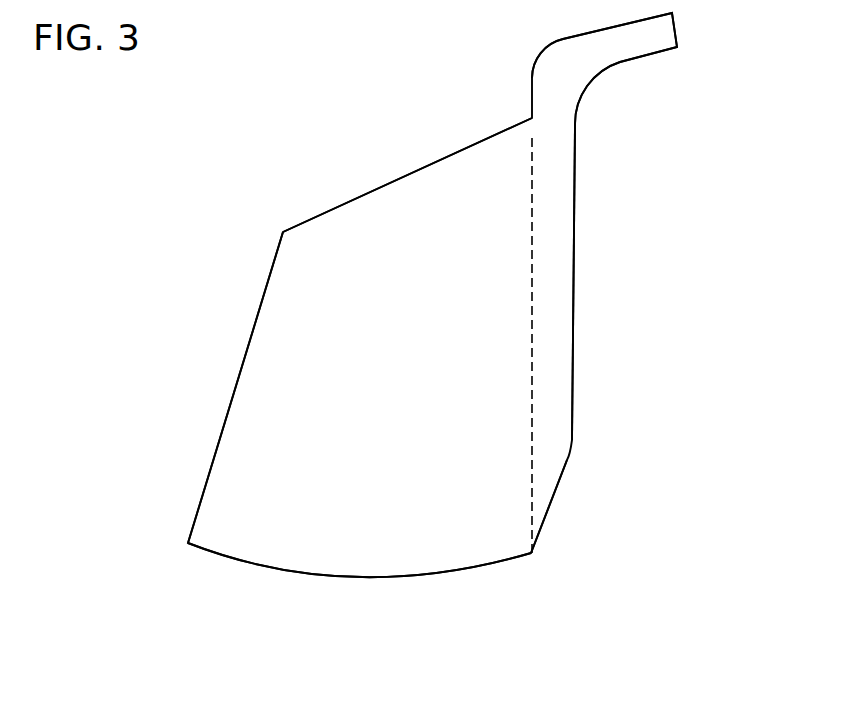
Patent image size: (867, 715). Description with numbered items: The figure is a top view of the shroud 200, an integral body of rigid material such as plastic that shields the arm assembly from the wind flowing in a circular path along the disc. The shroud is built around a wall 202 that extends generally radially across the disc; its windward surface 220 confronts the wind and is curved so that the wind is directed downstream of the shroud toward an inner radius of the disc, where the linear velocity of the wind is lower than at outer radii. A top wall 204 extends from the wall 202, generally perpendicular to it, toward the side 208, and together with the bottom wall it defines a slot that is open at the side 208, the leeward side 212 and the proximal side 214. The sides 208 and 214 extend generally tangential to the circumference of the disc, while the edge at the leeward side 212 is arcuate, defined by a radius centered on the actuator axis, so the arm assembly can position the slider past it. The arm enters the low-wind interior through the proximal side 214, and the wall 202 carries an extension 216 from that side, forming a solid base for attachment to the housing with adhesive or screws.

The shroud 200 is at (615, 250).
The wall 202 is at (560, 526).
The top wall 204 is at (355, 252).
The side 208 is at (228, 405).
The leeward side 212 is at (378, 577).
The proximal side 214 is at (432, 163).
The extension 216 is at (620, 65).
The windward surface 220 is at (572, 410).